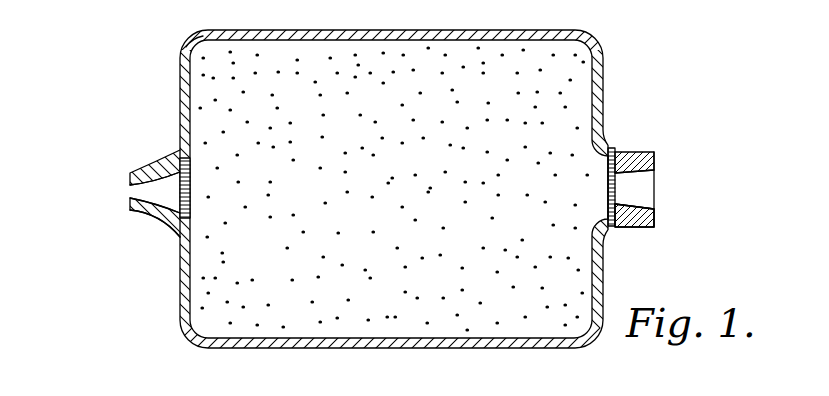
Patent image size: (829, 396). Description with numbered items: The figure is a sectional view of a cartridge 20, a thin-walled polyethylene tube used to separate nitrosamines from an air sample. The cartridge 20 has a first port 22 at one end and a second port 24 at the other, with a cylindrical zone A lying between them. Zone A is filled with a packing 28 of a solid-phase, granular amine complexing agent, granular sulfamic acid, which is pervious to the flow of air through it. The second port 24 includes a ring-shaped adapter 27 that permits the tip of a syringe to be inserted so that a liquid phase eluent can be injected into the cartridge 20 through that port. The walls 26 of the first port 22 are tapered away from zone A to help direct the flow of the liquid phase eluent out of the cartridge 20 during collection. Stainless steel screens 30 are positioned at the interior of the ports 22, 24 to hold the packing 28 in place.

The cartridge 20 is at (483, 349).
The first port 22 is at (125, 195).
The second port 24 is at (657, 174).
The walls of port 26 is at (158, 220).
The ring-shaped adapter 27 is at (656, 214).
The packing 28 is at (268, 256).
The stainless steel screens 30 is at (131, 188).
The zone A is at (222, 67).